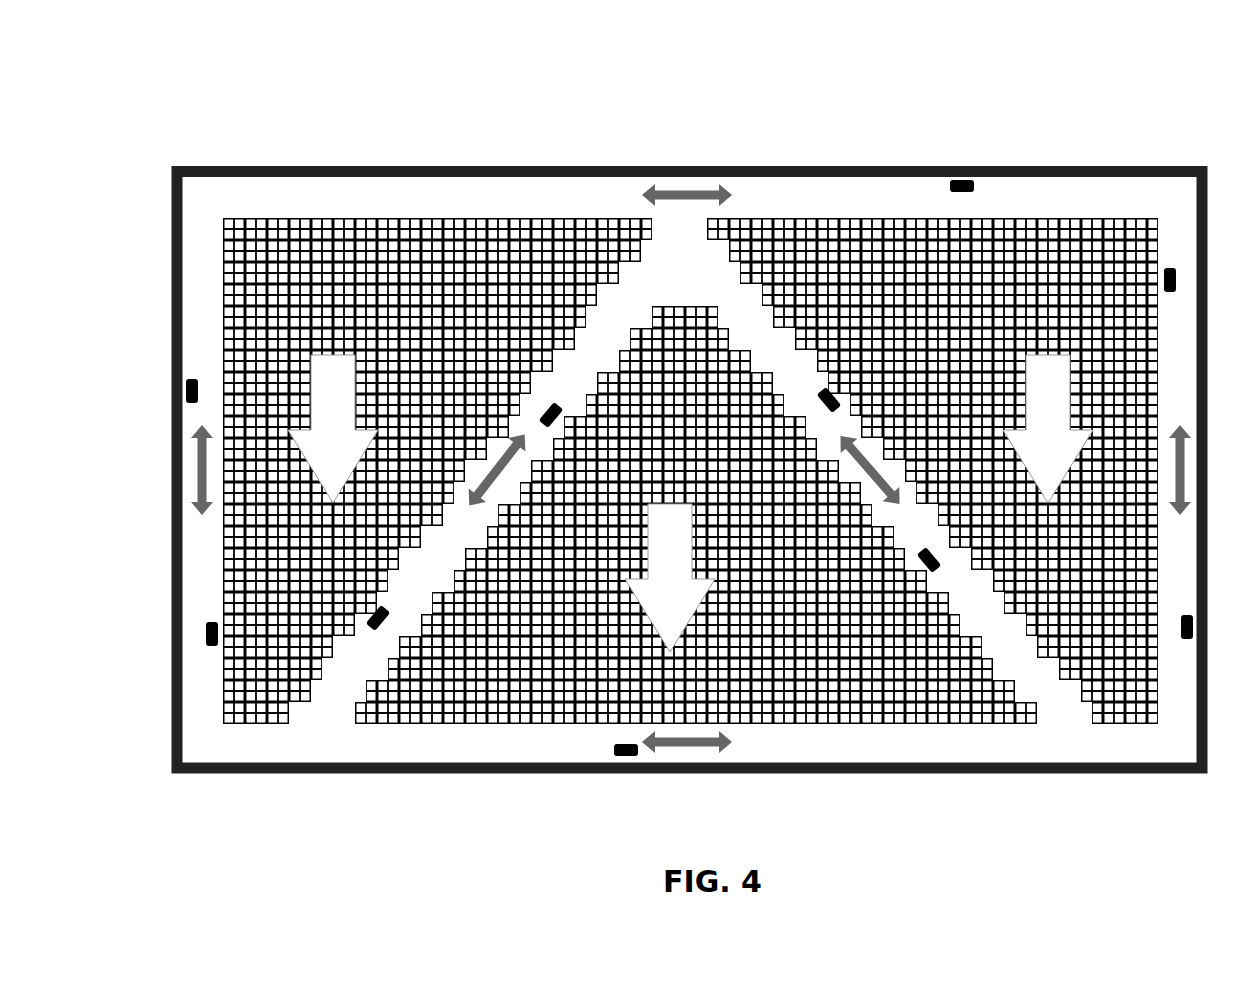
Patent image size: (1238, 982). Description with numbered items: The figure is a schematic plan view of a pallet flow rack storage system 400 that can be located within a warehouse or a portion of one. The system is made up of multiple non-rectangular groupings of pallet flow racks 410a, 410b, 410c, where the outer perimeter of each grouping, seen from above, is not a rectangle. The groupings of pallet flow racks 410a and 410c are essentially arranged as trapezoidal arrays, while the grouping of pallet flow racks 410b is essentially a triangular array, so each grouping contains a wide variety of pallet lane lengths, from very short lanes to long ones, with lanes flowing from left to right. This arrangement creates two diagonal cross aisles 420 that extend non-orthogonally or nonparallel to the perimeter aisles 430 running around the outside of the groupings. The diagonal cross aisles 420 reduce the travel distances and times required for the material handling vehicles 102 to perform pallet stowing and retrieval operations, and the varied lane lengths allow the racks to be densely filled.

The pallet flow rack storage system 400 is at (244, 92).
The material handling vehicle 102 is at (967, 185).
The grouping of pallet flow racks 410a is at (245, 725).
The grouping of pallet flow racks 410b is at (430, 725).
The grouping of pallet flow racks 410c is at (1125, 725).
The cross aisle 420 is at (350, 668).
The perimeter aisle 430 is at (537, 200).